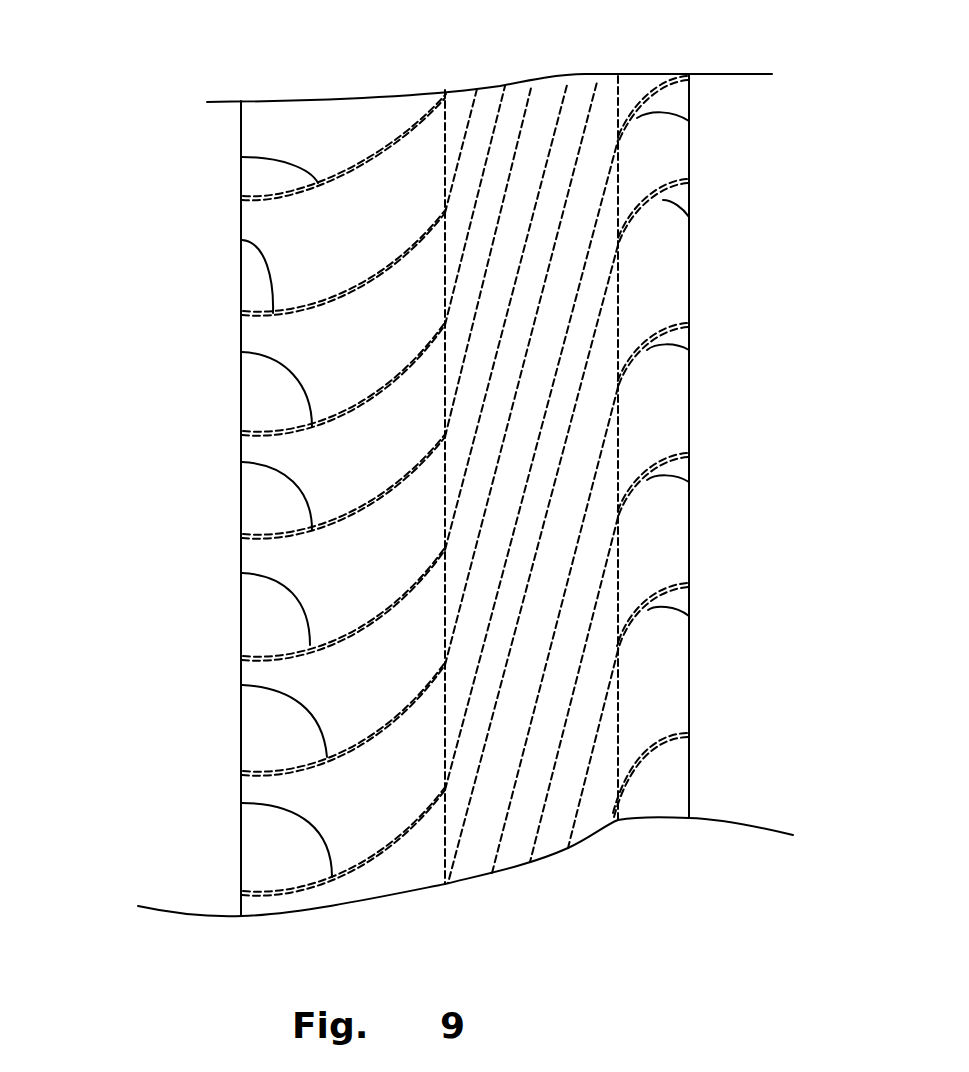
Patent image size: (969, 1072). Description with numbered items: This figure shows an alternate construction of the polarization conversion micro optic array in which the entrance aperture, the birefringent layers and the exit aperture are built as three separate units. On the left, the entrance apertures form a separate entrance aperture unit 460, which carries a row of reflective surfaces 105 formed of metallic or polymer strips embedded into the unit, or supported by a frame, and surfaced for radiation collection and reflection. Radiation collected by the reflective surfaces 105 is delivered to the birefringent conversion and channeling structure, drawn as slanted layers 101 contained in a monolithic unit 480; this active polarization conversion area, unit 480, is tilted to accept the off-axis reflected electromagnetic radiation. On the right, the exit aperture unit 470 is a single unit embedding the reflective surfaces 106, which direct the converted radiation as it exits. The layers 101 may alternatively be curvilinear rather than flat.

The birefringent layers 101 is at (597, 93).
The reflective surfaces 105 is at (242, 157).
The reflective surfaces 106 is at (689, 121).
The entrance aperture unit 460 is at (222, 214).
The exit aperture unit 470 is at (700, 792).
The monolithic unit 480 is at (636, 283).